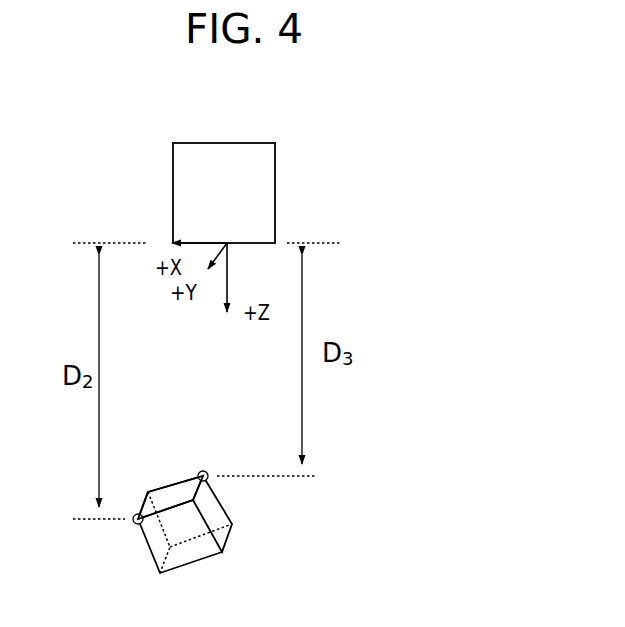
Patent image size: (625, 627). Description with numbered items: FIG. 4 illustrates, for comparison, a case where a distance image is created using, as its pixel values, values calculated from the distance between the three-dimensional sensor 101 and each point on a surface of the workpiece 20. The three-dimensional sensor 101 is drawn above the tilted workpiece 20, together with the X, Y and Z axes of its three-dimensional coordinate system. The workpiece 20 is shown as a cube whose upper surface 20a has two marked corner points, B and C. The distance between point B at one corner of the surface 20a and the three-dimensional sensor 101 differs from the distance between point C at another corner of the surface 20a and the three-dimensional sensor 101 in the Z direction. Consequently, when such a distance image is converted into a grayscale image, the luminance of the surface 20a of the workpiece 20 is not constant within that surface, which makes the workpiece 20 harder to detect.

The three-dimensional sensor 101 is at (230, 143).
The workpiece 20 is at (222, 543).
The surface of the workpiece 20a is at (165, 493).